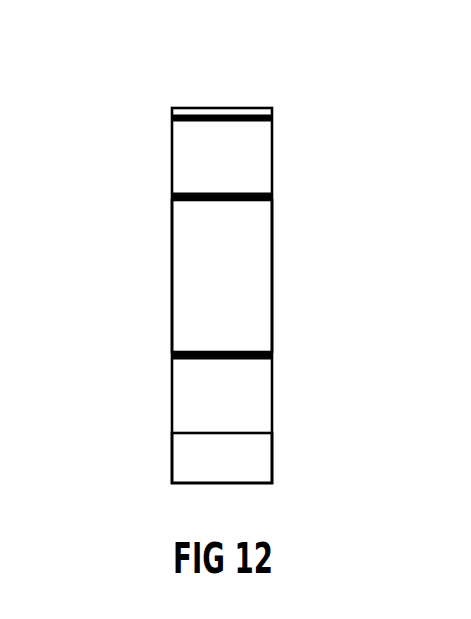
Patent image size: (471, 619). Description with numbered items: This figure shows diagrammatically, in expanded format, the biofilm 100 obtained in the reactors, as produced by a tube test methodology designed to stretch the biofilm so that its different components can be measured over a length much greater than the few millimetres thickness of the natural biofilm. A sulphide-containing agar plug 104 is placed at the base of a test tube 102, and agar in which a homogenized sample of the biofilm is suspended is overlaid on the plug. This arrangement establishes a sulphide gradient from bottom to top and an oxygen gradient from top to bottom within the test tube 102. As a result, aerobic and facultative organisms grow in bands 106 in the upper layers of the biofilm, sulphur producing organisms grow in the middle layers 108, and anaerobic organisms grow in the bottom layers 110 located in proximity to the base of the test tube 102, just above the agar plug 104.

The layered structure 100 is at (122, 77).
The test tube 102 is at (272, 284).
The sulphide-containing agar plug 104 is at (248, 461).
The bands 106 is at (272, 117).
The middle layers 108 is at (272, 197).
The bottom layers 110 is at (272, 357).